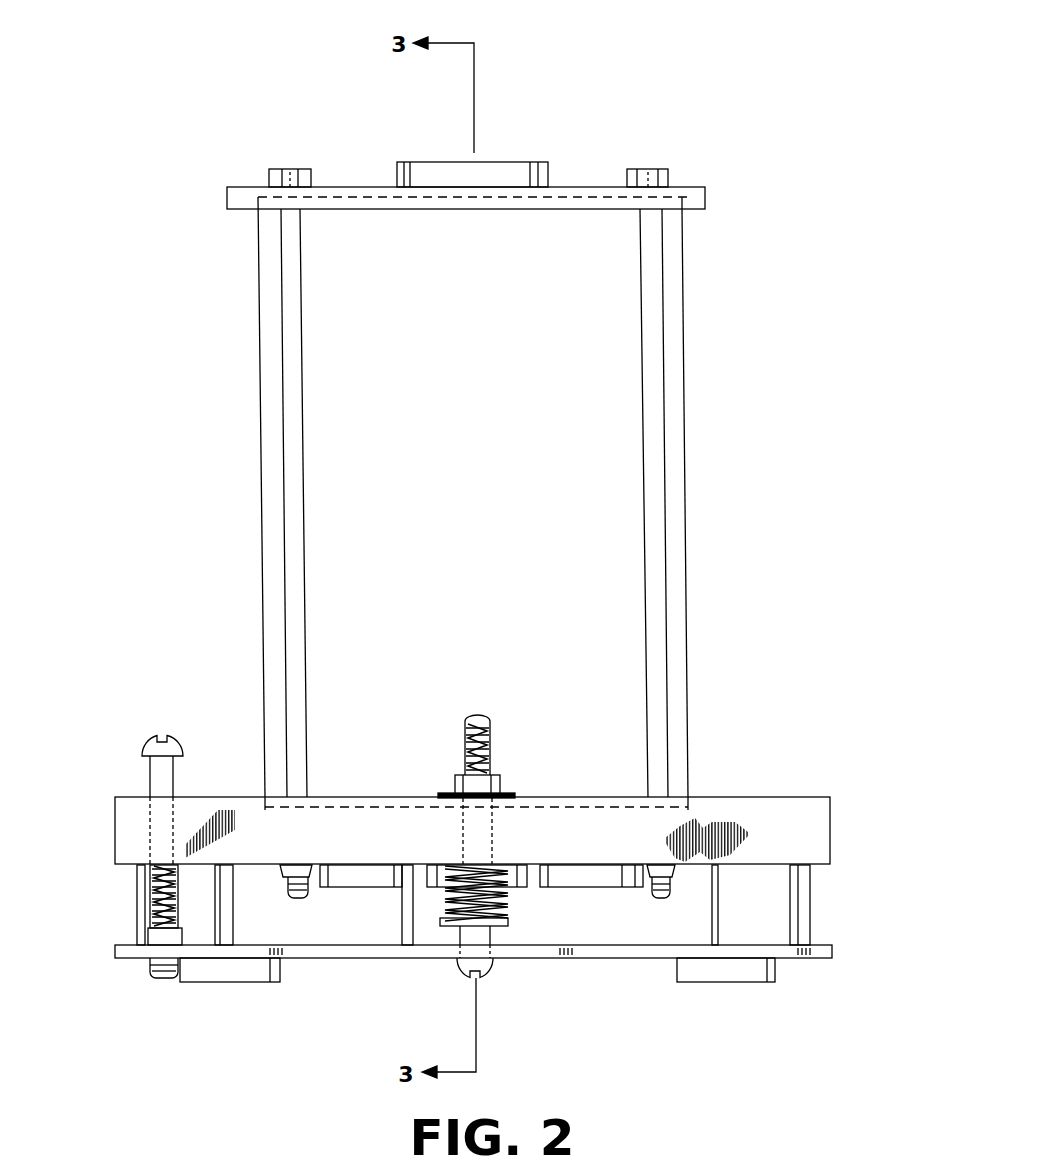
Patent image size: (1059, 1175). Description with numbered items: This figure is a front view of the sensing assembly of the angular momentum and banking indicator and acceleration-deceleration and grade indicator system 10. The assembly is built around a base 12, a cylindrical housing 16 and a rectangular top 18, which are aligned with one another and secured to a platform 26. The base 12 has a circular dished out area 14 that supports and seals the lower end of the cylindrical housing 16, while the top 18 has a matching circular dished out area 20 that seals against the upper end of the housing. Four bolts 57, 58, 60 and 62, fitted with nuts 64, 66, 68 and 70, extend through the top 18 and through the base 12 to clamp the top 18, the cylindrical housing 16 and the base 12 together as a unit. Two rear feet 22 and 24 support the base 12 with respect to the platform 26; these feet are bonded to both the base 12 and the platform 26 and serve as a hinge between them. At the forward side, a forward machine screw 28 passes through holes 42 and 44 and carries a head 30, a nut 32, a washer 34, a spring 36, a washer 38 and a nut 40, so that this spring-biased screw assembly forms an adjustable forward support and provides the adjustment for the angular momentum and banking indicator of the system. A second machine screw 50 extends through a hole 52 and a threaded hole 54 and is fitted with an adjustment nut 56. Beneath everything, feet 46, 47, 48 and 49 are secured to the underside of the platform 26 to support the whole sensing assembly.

The grade indicator system 10 is at (826, 52).
The base 12 is at (770, 795).
The circular dished out area 14 is at (675, 812).
The cylindrical housing 16 is at (509, 497).
The top 18 is at (741, 191).
The circular dished out area 20 is at (500, 177).
The rear foot 22 is at (183, 893).
The rear foot 24 is at (782, 917).
The platform 26 is at (827, 943).
The forward machine screw 28 is at (480, 716).
The head 30 is at (463, 968).
The nut 32 is at (458, 938).
The washer 34 is at (515, 932).
The spring 36 is at (510, 905).
The washer 38 is at (445, 778).
The nut 40 is at (495, 780).
The hole 42 is at (495, 950).
The hole 44 is at (515, 831).
The foot 46 is at (220, 973).
The foot 47 is at (257, 973).
The foot 48 is at (707, 972).
The foot 49 is at (747, 972).
The machine screw 50 is at (157, 782).
The hole 52 is at (150, 818).
The threaded hole 54 is at (147, 950).
The adjustment nut 56 is at (147, 935).
The bolt 57 is at (270, 162).
The bolt 58 is at (300, 157).
The bolt 60 is at (625, 162).
The bolt 62 is at (658, 157).
The nut 64 is at (272, 902).
The nut 66 is at (313, 878).
The nut 68 is at (645, 875).
The nut 70 is at (675, 888).